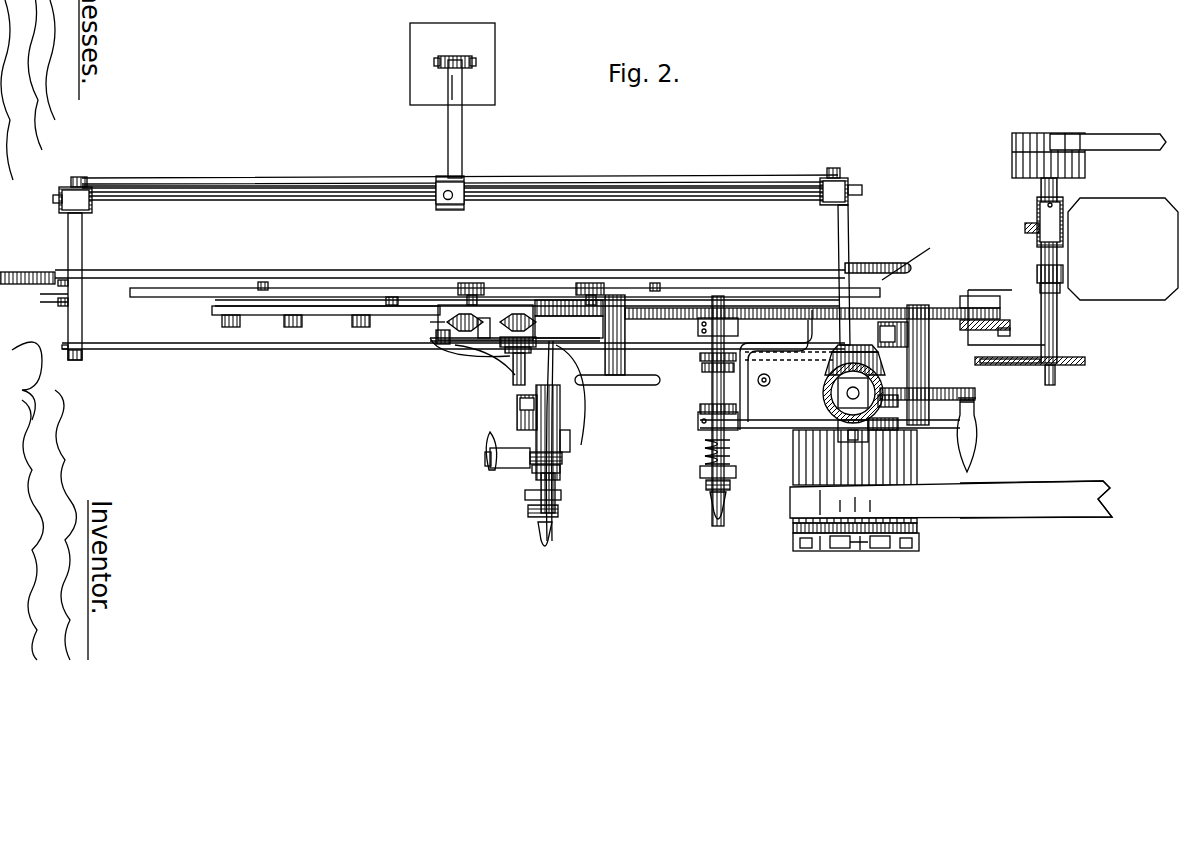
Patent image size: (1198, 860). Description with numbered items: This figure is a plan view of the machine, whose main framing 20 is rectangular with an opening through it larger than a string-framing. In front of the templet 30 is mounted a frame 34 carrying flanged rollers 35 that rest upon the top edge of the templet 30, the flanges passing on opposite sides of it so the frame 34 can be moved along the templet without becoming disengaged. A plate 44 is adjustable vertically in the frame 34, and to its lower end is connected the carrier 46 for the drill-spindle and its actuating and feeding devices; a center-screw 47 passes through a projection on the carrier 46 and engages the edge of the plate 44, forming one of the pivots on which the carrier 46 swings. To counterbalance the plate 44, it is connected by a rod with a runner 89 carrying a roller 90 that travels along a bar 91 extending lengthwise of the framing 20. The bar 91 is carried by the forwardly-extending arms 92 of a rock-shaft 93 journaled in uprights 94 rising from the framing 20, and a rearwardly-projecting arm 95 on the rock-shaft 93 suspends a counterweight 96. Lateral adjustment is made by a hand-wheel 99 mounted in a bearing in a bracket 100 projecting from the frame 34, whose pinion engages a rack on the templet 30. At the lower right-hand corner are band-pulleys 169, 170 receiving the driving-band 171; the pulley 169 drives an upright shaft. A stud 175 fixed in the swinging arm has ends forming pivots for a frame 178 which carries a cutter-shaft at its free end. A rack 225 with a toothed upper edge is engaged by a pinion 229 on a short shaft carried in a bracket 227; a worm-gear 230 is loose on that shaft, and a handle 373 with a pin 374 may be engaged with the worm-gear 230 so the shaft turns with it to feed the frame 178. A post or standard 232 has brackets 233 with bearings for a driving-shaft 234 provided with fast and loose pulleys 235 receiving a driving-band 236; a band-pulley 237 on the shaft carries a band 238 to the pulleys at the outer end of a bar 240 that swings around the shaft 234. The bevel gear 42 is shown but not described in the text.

The main framing 20 is at (460, 205).
The rock-shaft 93 is at (652, 196).
The counterweight 96 is at (452, 64).
The rearwardly-projecting arm 95 is at (463, 134).
The uprights 94 is at (68, 185).
The forwardly-extending arms 92 is at (82, 320).
The bar 91 is at (165, 350).
The templet 30 is at (630, 292).
The rollers 35 is at (470, 286).
The frame 34 is at (500, 308).
The bevel gear 42 is at (518, 318).
The center-screw 47 is at (438, 345).
The plate 44 is at (470, 345).
The carrier 46 is at (515, 355).
The runner 89 is at (505, 355).
The roller 90 is at (520, 360).
The bracket 100 is at (626, 355).
The hand-wheel 99 is at (645, 385).
The frame 178 is at (830, 370).
The pinion 229 is at (935, 322).
The rack 225 is at (955, 308).
The bracket 227 is at (890, 345).
The handle 373 is at (930, 420).
The worm-gear 230 is at (977, 395).
The pin 374 is at (975, 408).
The stud 175 is at (750, 530).
The band-pulley 169 is at (912, 455).
The band-pulley 170 is at (918, 483).
The driving-band 171 is at (1036, 499).
The fast and loose pulleys 235 is at (1012, 160).
The driving-band 236 is at (1115, 140).
The driving-shaft 234 is at (1040, 190).
The brackets 233 is at (1037, 220).
The post or standard 232 is at (1123, 249).
The bar 240 is at (1002, 318).
The band-pulley 237 is at (1080, 357).
The band 238 is at (1000, 366).